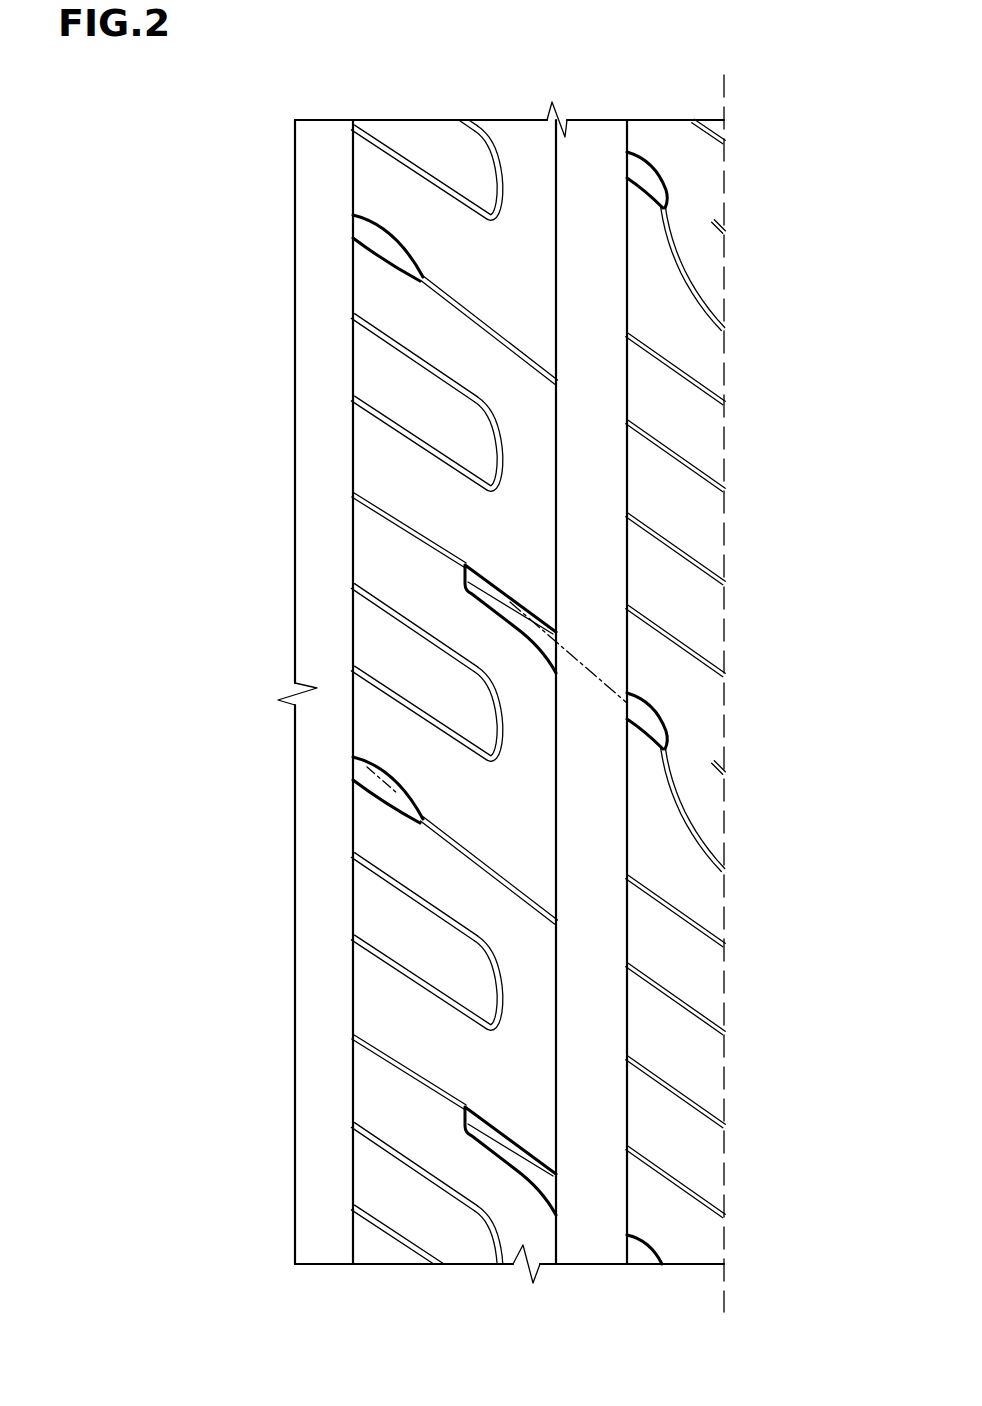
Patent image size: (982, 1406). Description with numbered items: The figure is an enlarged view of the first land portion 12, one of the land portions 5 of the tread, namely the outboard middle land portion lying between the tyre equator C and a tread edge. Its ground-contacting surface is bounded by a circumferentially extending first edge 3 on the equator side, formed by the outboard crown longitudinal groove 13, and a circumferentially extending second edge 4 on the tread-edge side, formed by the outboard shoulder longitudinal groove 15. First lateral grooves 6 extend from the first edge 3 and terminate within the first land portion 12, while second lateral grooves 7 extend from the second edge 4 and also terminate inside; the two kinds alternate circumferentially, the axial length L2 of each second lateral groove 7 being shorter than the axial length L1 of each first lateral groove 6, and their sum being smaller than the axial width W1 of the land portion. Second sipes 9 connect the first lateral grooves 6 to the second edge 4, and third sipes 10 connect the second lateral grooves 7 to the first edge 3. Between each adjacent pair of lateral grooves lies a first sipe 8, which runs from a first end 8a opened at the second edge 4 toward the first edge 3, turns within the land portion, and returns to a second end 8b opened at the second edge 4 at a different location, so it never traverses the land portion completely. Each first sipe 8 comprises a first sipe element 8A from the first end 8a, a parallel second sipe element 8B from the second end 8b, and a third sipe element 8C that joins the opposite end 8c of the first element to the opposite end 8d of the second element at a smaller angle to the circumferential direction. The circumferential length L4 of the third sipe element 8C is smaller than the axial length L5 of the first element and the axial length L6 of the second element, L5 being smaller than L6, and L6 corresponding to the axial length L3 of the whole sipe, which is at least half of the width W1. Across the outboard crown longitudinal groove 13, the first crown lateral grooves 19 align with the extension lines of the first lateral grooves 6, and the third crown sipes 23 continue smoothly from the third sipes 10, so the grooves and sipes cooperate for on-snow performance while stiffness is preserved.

The first edge 3 is at (558, 181).
The second edge 4 is at (352, 146).
The land portions 5 is at (509, 663).
The first land portion 12 is at (520, 145).
The outboard shoulder longitudinal groove 15 is at (307, 142).
The first lateral grooves 6 is at (512, 602).
The second lateral grooves 7 is at (370, 237).
The first sipes 8 is at (494, 692).
The first sipe element 8A is at (400, 352).
The second sipe element 8B is at (423, 443).
The third sipe element 8C is at (490, 438).
The first end 8a is at (352, 317).
The second end 8b is at (352, 397).
The opposite end 8c is at (488, 405).
The opposite end 8d is at (507, 496).
The second sipes 9 is at (393, 1063).
The third sipes 10 is at (513, 883).
The outboard crown longitudinal groove 13 is at (603, 225).
The first crown lateral grooves 19 is at (655, 717).
The third crown sipes 23 is at (690, 1013).
The tyre equator C is at (725, 678).
The axial length of first lateral groove L1 is at (465, 565).
The axial length of second lateral groove L2 is at (422, 815).
The axial length of first sipe L3 is at (430, 1319).
The axial length of second sipe element L6 is at (353, 1375).
The circumferential length of third sipe element L4 is at (508, 1330).
The axial length of first sipe element L5 is at (487, 942).
The axial width of first land portion W1 is at (556, 1375).